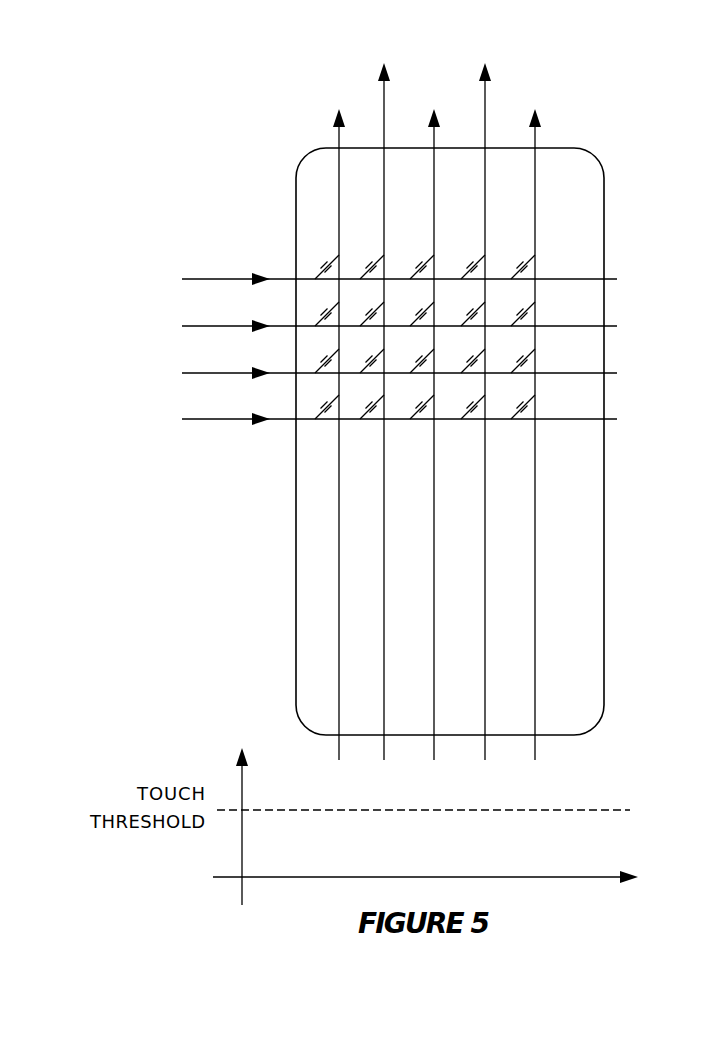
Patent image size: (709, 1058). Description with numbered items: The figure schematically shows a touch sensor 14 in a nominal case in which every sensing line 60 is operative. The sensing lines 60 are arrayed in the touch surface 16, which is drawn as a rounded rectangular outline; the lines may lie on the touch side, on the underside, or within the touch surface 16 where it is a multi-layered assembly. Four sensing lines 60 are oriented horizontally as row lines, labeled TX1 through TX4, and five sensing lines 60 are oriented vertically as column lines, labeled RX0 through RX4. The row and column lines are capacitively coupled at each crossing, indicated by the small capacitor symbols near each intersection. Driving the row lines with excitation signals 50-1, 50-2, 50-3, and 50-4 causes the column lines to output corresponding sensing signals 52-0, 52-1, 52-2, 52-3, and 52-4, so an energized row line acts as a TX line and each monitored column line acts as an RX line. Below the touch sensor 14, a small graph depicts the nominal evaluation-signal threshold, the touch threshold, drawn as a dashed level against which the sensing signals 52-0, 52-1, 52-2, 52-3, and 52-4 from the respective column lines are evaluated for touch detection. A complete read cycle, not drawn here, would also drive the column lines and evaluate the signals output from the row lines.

The touch sensor 14 is at (240, 167).
The touch surface 16 is at (605, 190).
The excitation signal 50-1 is at (225, 274).
The excitation signal 50-2 is at (225, 320).
The excitation signal 50-3 is at (225, 368).
The excitation signal 50-4 is at (225, 414).
The sensing signal 52-0 is at (334, 412).
The sensing signal 52-1 is at (380, 387).
The sensing signal 52-2 is at (429, 412).
The sensing signal 52-3 is at (479, 387).
The sensing signal 52-4 is at (529, 412).
The sensing line 60 is at (288, 422).